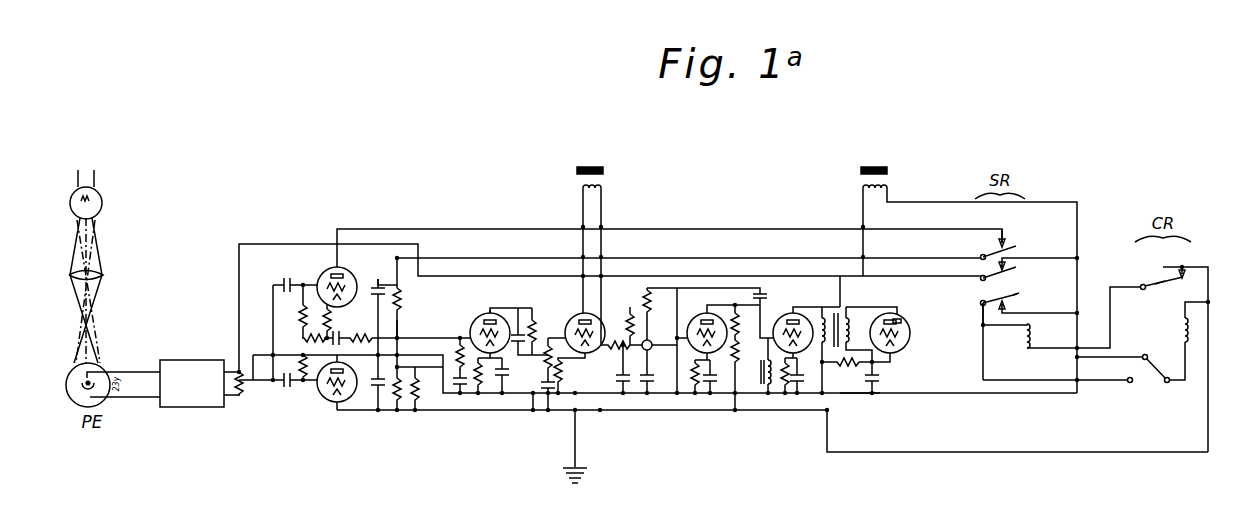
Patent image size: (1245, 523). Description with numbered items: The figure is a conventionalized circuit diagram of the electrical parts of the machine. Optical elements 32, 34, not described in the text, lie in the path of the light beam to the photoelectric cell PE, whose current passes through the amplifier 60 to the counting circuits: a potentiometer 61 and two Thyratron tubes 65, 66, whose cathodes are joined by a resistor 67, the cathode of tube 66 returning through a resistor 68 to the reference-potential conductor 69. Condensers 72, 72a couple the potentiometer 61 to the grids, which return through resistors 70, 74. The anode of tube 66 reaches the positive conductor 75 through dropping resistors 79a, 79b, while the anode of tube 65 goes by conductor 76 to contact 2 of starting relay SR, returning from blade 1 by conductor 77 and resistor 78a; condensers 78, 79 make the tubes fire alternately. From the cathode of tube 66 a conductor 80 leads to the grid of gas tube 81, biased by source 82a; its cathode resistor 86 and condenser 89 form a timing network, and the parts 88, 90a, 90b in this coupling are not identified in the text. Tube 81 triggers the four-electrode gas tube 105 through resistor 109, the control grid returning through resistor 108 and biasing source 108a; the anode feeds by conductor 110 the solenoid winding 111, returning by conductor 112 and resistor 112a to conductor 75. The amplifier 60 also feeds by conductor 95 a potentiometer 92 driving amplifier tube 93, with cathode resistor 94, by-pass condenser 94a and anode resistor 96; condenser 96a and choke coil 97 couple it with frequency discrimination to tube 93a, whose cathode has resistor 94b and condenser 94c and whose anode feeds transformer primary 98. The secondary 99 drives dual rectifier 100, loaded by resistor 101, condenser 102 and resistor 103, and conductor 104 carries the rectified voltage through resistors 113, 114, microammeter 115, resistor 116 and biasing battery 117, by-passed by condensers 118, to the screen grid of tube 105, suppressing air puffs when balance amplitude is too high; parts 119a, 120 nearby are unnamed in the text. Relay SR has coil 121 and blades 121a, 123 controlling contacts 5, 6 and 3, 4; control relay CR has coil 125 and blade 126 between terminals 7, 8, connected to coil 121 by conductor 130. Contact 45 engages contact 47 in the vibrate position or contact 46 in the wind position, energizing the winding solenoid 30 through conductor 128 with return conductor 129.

The lamp 32 is at (102, 203).
The lens 34 is at (104, 275).
The amplifier 60 is at (192, 383).
The potentiometer 61 is at (236, 396).
The electron tube 65 is at (325, 270).
The electron tube 66 is at (329, 401).
The resistor 67 is at (331, 322).
The resistor 68 is at (305, 338).
The conductor 69 is at (253, 355).
The grid return resistor 70 is at (300, 312).
The condenser 72 is at (285, 279).
The condenser 72a is at (285, 387).
The resistor 74 is at (300, 381).
The conductor 75 is at (700, 412).
The conductor 76 is at (350, 229).
The conductor 77 is at (440, 258).
The condenser 78 is at (374, 287).
The resistor 78a is at (400, 298).
The condenser 79 is at (375, 392).
The dropping resistor 79a is at (397, 404).
The dropping resistor 79b is at (415, 403).
The conductor 80 is at (412, 338).
The electron tube 81 is at (478, 315).
The biasing source 82a is at (460, 394).
The resistor 86 is at (478, 394).
The resistor 88 is at (532, 318).
The condenser 89 is at (496, 305).
The condenser 90a is at (340, 333).
The resistor 90b is at (399, 325).
The potentiometer 92 is at (660, 339).
The amplifier tube 93 is at (700, 316).
The tube 93a is at (765, 296).
The resistor 94 is at (697, 395).
The by-pass condenser 94a is at (712, 395).
The resistor 94b is at (768, 395).
The by-pass condenser 94c is at (797, 395).
The conductor 95 is at (239, 252).
The resistor 96 is at (738, 322).
The condenser 96a is at (760, 288).
The choke coil 97 is at (738, 350).
The transformer primary 98 is at (790, 372).
The secondary winding 99 is at (830, 305).
The dual rectifier tube 100 is at (905, 348).
The resistor 101 is at (879, 380).
The by-pass condenser 102 is at (860, 394).
The resistor 103 is at (847, 353).
The conductor 104 is at (805, 276).
The gas discharge tube 105 is at (571, 318).
The resistor 108 is at (560, 395).
The biasing source 108a is at (546, 412).
The resistor 109 is at (548, 412).
The conductor 110 is at (583, 190).
The solenoid winding 111 is at (592, 166).
The return conductor 112 is at (603, 200).
The resistor 112a is at (603, 412).
The series resistance 113 is at (647, 288).
The series resistance 114 is at (630, 312).
The microammeter 115 is at (655, 340).
The resistor 116 is at (623, 352).
The biasing battery 117 is at (677, 395).
The condensers 118 is at (647, 395).
The conductor 119a is at (677, 400).
The condenser 120 is at (623, 395).
The energizing coil 121 is at (1022, 340).
The contact blade 121a is at (981, 325).
The contact blade 123 is at (1019, 294).
The energizing coil 125 is at (1180, 330).
The contact blade 126 is at (1018, 246).
The conductor 128 is at (861, 190).
The conductor 129 is at (905, 202).
The conductor 130 is at (1138, 284).
The winding solenoid 30 is at (876, 166).
The relay switch blade terminal 1 is at (981, 255).
The contact 2 is at (1005, 238).
The contact 3 is at (980, 278).
The contact 4 is at (1017, 267).
The contact 5 is at (980, 303).
The contact 6 is at (1010, 313).
The terminal 7 is at (1148, 291).
The terminal 8 is at (1178, 272).
The contact 45 is at (1142, 360).
The contact 46 is at (1130, 383).
The contact 47 is at (1168, 383).